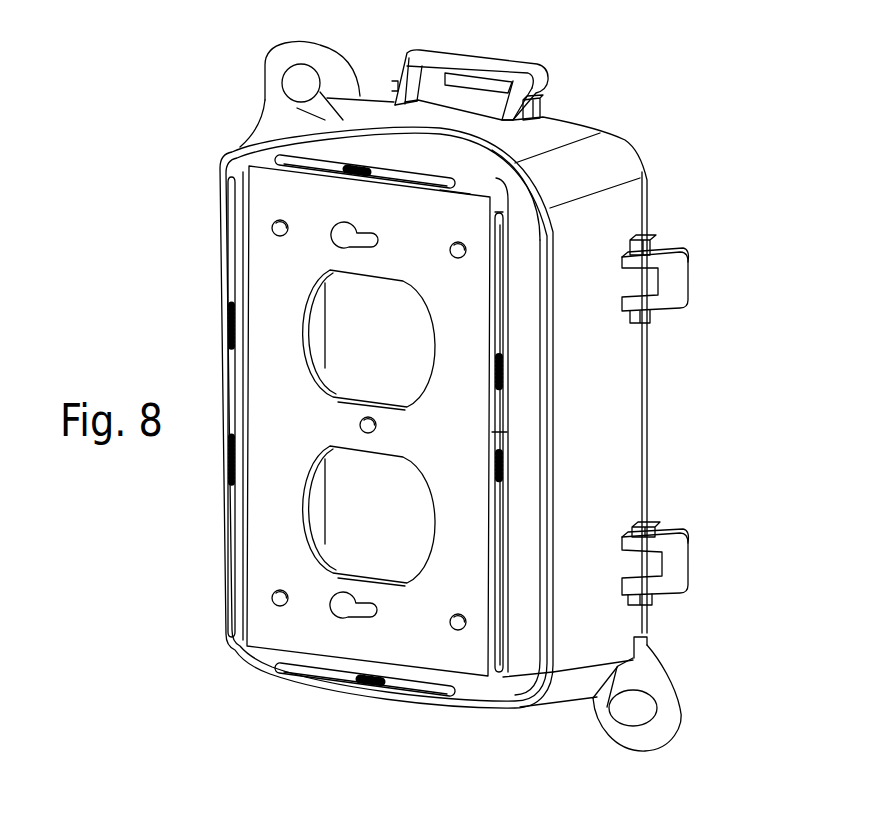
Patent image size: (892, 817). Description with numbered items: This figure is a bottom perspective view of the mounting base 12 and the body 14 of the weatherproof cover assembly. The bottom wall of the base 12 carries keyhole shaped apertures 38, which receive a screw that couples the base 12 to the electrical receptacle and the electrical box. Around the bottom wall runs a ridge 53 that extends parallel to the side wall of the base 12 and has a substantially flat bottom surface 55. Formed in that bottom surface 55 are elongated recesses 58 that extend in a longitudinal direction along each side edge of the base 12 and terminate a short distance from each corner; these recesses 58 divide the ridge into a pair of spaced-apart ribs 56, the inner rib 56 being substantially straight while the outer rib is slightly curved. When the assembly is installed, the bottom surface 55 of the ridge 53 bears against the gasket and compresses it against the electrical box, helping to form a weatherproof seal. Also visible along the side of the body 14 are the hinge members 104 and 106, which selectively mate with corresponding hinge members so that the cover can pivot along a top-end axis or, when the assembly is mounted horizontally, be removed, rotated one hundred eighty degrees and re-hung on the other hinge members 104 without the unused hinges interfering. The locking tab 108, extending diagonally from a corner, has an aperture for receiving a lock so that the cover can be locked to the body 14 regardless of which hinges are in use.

The mounting base 12 is at (522, 278).
The body 14 is at (627, 200).
The keyhole shaped apertures 38 is at (331, 236).
The ridge 53 is at (463, 193).
The bottom surface 55 is at (490, 207).
The ribs 56 is at (504, 445).
The elongated recesses 58 is at (296, 180).
The hinge members 104 is at (687, 252).
The hinge member 106 is at (547, 69).
The locking tab 108 is at (265, 70).